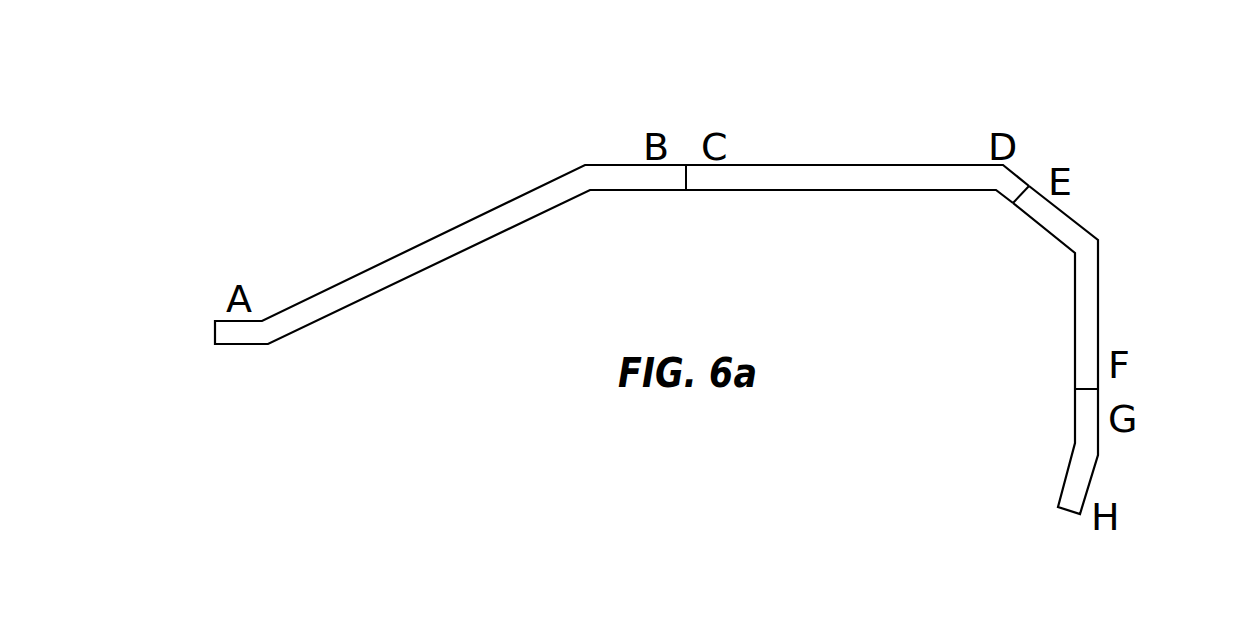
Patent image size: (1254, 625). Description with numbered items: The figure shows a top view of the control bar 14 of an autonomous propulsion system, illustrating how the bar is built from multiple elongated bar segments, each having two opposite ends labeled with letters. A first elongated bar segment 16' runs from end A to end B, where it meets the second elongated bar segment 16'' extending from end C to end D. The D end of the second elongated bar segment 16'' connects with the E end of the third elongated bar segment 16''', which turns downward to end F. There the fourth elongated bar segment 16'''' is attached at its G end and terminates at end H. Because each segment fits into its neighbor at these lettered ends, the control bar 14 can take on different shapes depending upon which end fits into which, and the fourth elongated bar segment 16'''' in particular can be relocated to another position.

The control bar 14 is at (719, 324).
The first elongated bar segment 16' is at (450, 233).
The second elongated bar segment 16'' is at (857, 117).
The third elongated bar segment 16''' is at (1118, 272).
The fourth elongated bar segment 16'''' is at (1000, 451).